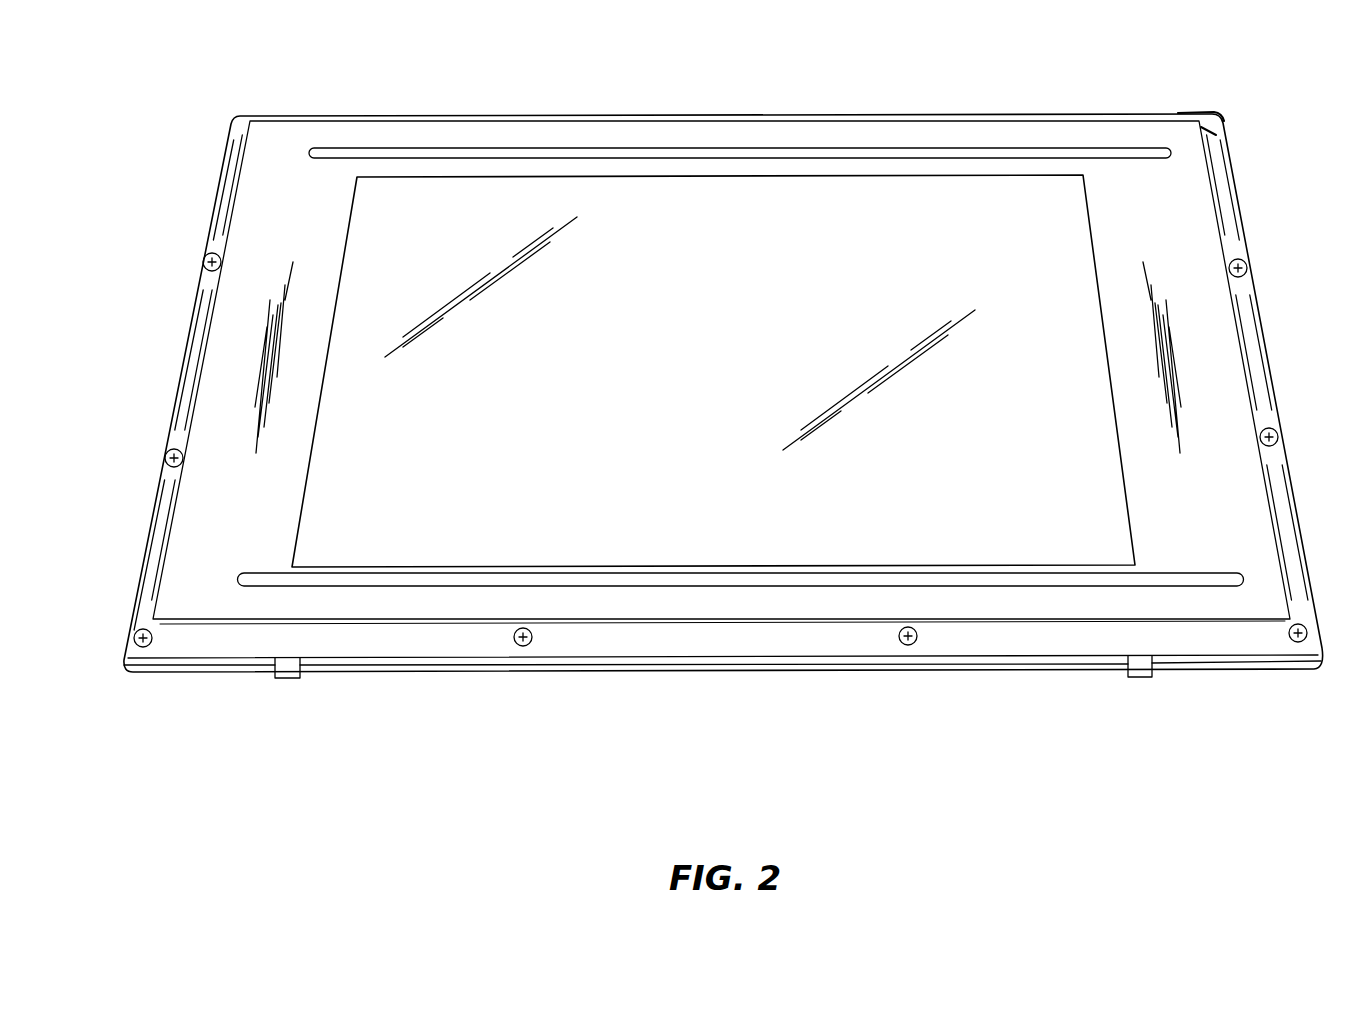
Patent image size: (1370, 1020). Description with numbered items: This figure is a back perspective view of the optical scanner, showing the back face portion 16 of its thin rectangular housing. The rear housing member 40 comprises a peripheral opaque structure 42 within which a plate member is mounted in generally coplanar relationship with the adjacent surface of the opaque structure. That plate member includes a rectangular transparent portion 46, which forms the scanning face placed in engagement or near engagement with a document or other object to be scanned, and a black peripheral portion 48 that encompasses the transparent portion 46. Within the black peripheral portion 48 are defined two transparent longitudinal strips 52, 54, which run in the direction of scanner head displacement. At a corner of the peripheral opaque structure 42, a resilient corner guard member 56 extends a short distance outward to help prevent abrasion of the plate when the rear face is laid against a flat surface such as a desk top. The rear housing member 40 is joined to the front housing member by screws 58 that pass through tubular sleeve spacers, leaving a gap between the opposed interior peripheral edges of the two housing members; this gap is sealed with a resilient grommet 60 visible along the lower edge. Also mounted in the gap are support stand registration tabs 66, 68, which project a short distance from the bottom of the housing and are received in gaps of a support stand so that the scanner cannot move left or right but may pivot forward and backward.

The back face portion 16 is at (745, 228).
The rear housing member 40 is at (400, 645).
The peripheral opaque structure 42 is at (573, 645).
The transparent portion 46 is at (490, 522).
The black peripheral portion 48 is at (640, 602).
The transparent longitudinal strip 52 is at (740, 578).
The transparent longitudinal strip 54 is at (597, 152).
The resilient corner guard member 56 is at (1205, 112).
The screws 58 is at (908, 645).
The resilient grommet 60 is at (1033, 660).
The support stand registration tab 66 is at (286, 678).
The support stand registration tab 68 is at (1140, 675).